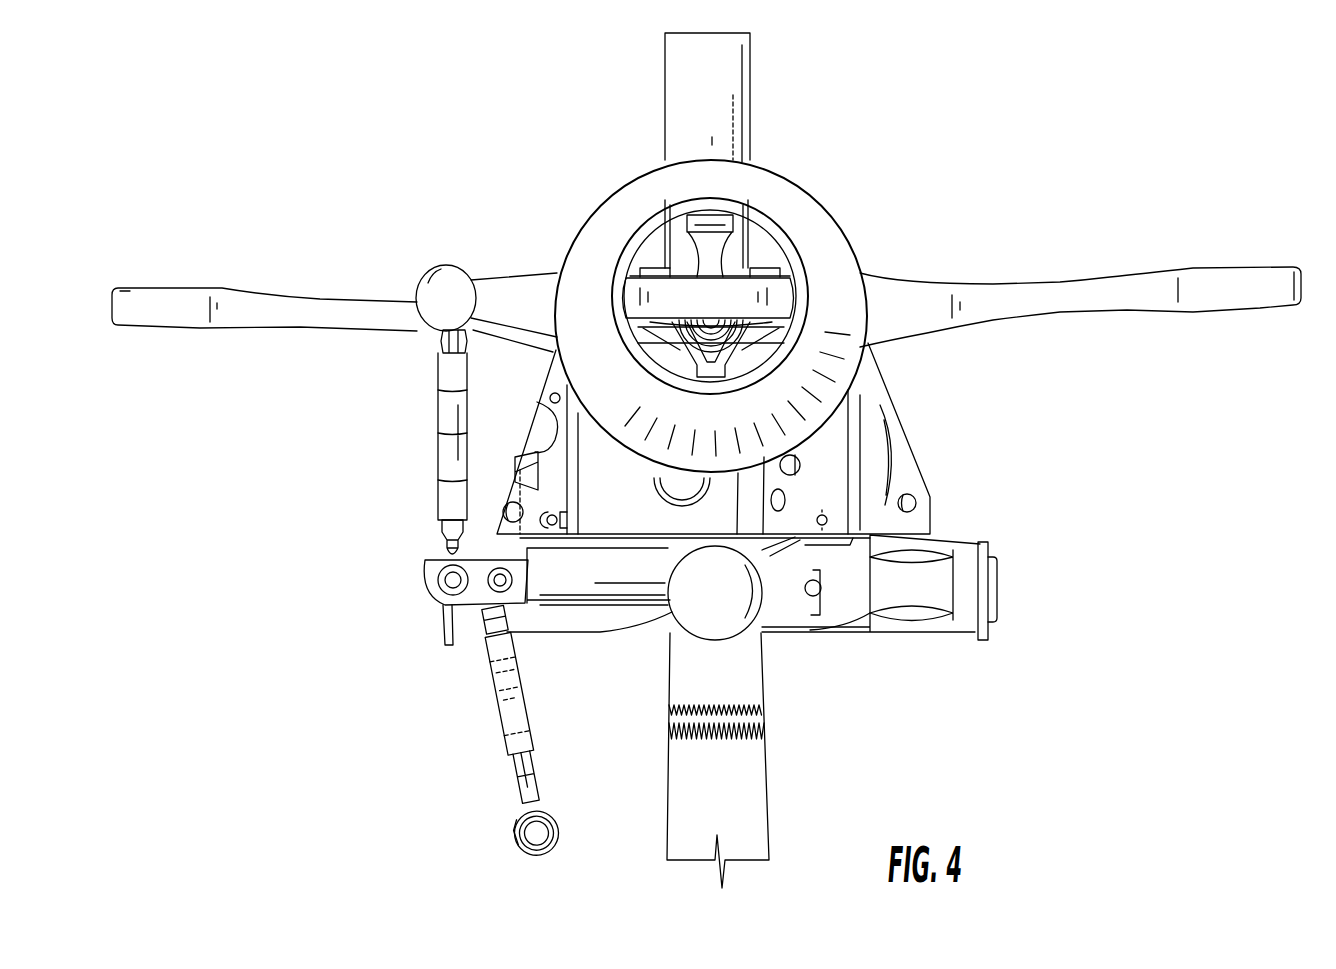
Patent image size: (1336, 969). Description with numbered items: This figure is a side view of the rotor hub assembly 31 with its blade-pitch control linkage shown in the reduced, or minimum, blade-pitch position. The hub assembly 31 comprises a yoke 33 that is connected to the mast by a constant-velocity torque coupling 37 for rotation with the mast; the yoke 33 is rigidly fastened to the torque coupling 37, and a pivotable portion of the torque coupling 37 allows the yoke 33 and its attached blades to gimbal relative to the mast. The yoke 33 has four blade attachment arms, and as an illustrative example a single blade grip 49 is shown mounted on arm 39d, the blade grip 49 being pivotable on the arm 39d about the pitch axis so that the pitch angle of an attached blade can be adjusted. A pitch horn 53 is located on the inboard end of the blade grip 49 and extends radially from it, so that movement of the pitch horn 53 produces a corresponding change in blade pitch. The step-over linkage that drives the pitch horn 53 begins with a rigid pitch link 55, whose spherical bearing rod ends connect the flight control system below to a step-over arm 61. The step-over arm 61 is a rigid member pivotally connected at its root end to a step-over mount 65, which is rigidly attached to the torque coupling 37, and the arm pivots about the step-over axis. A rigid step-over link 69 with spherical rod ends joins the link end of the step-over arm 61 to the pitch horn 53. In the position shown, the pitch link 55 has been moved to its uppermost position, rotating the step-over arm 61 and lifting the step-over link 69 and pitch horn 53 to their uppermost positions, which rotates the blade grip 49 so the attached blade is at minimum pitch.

The rotor hub assembly 31 is at (1022, 143).
The yoke 33 is at (1106, 278).
The constant-velocity torque coupling 37 is at (908, 435).
The blade attachment arm 39d is at (778, 297).
The blade grip 49 is at (810, 232).
The pitch horn 53 is at (513, 277).
The pitch link 55 is at (490, 707).
The step-over arm 61 is at (588, 609).
The step-over mount 65 is at (745, 618).
The step-over link 69 is at (437, 430).